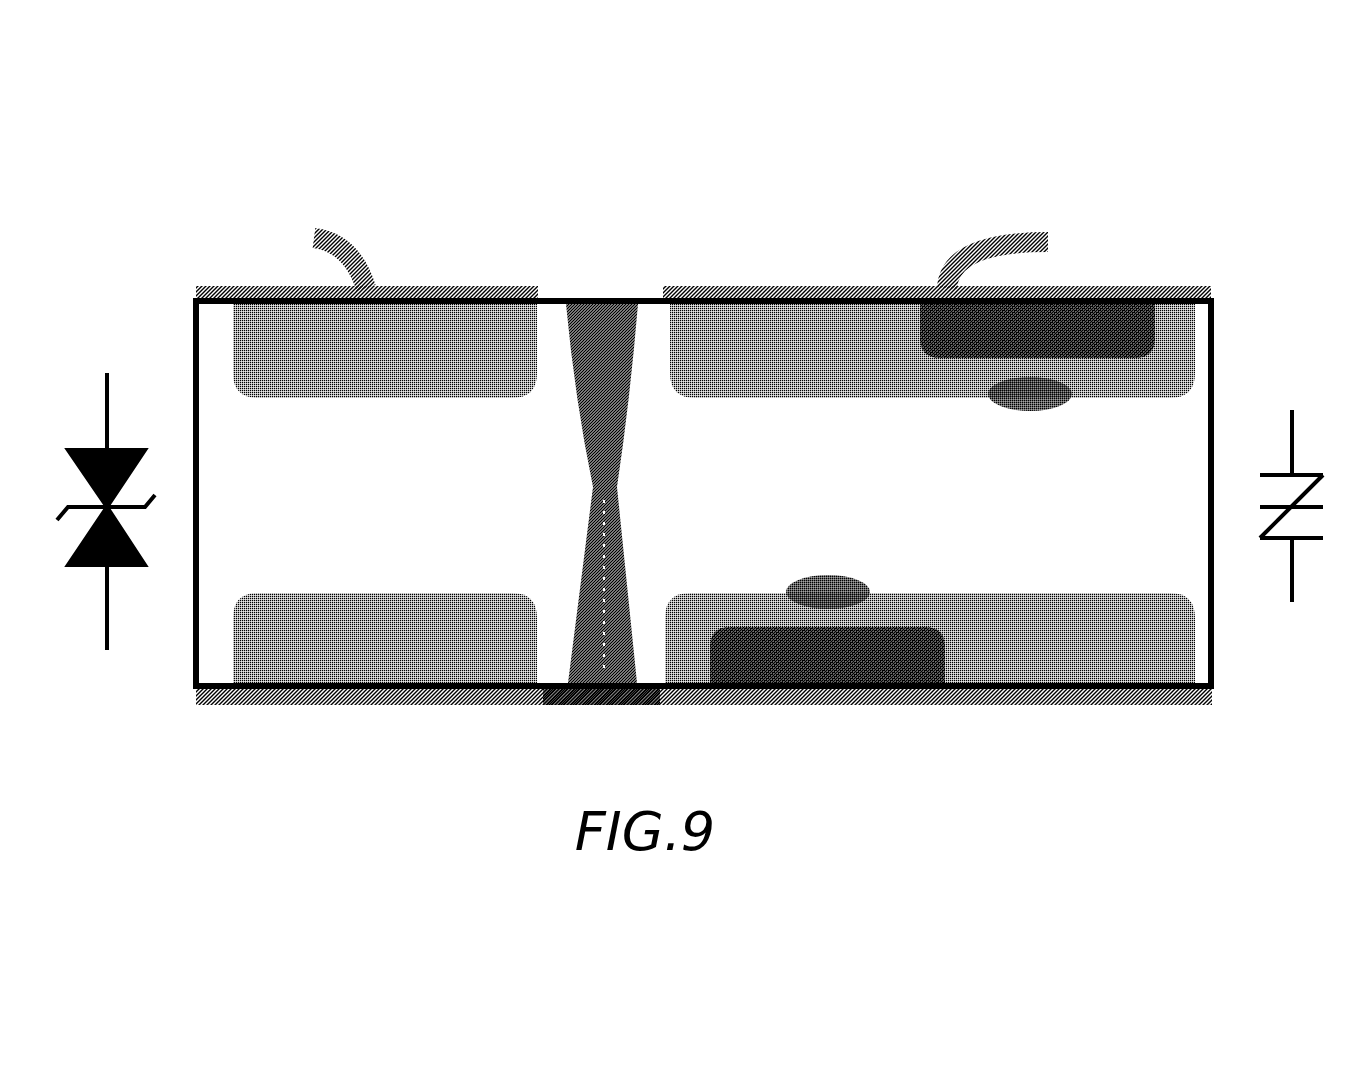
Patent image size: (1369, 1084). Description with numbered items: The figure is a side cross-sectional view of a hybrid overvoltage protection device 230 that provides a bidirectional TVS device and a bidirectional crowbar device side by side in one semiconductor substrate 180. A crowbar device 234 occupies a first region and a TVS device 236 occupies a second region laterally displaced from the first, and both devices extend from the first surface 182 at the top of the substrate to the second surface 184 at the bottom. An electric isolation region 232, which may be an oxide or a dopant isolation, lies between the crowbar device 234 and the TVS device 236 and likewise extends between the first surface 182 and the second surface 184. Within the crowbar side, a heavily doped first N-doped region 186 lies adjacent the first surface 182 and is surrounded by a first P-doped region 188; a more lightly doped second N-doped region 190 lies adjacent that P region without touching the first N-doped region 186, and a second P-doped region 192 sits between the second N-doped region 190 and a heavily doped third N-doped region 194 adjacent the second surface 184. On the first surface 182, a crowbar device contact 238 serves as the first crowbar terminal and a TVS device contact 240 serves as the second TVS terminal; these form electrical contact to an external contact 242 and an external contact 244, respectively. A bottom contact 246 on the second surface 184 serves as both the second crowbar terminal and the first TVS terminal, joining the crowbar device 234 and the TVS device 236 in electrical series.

The semiconductor substrate 180 is at (192, 652).
The first surface 182 is at (615, 290).
The second surface 184 is at (688, 710).
The first N-doped region 186 is at (1155, 316).
The first P-doped region 188 is at (1187, 372).
The second N-doped region 190 is at (1215, 430).
The second P-doped region 192 is at (1190, 633).
The third N-doped region 194 is at (855, 687).
The overvoltage protection device 230 is at (177, 176).
The electric isolation region 232 is at (568, 667).
The crowbar device 234 is at (877, 193).
The TVS device 236 is at (382, 196).
The crowbar device contact 238 is at (1110, 290).
The TVS device contact 240 is at (196, 290).
The external contact 242 is at (955, 262).
The external contact 244 is at (318, 245).
The bottom contact 246 is at (318, 703).